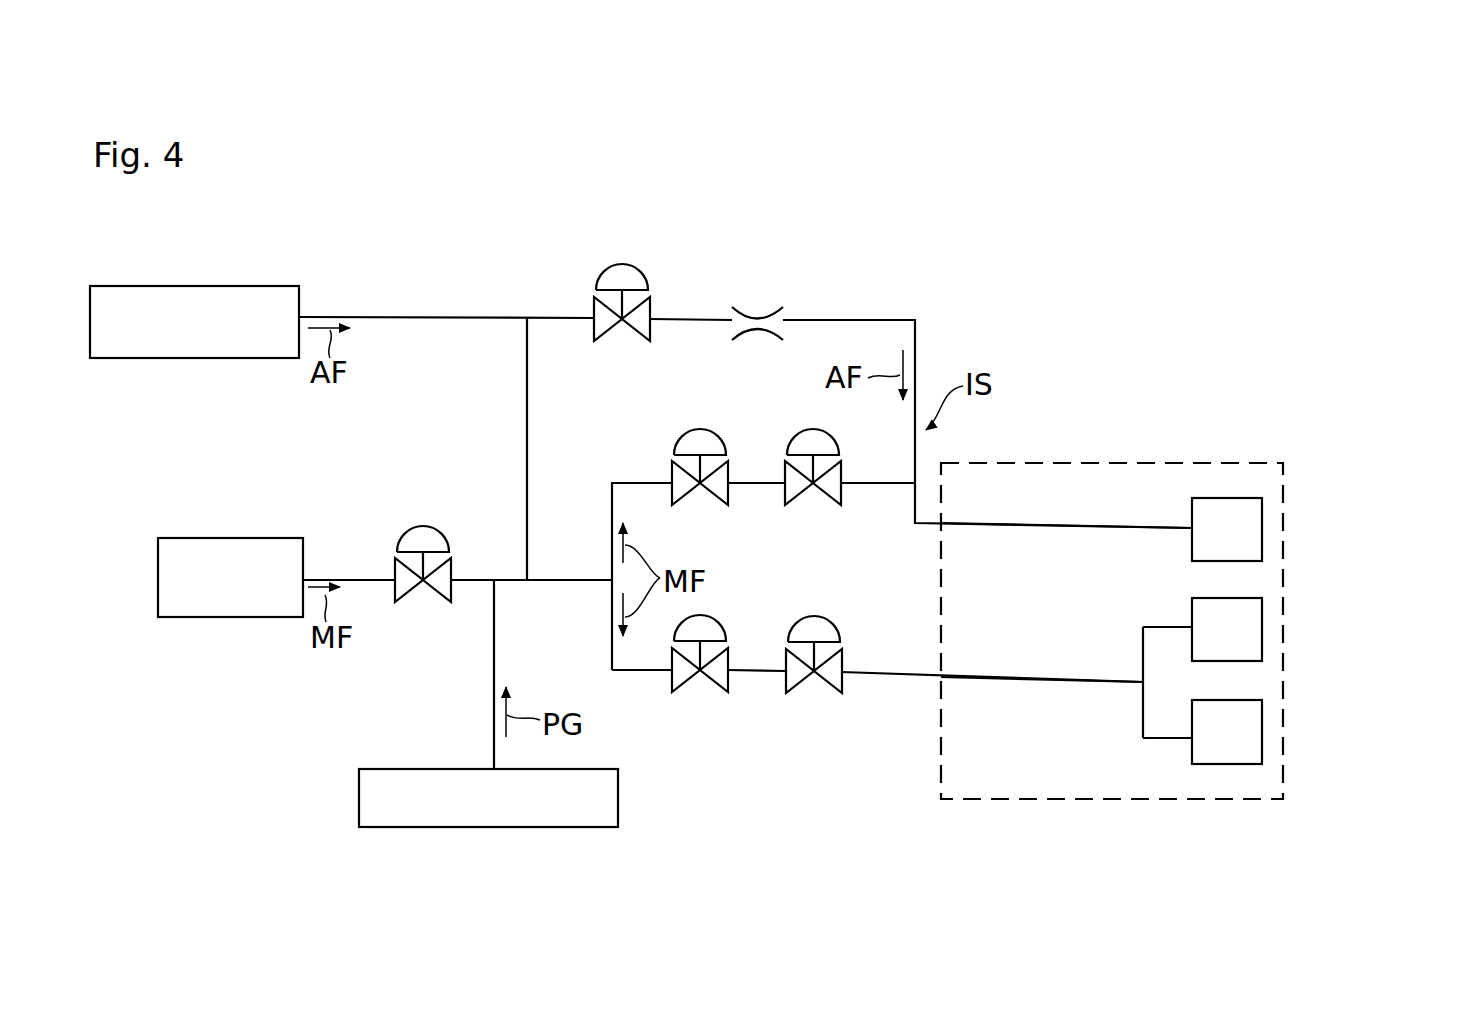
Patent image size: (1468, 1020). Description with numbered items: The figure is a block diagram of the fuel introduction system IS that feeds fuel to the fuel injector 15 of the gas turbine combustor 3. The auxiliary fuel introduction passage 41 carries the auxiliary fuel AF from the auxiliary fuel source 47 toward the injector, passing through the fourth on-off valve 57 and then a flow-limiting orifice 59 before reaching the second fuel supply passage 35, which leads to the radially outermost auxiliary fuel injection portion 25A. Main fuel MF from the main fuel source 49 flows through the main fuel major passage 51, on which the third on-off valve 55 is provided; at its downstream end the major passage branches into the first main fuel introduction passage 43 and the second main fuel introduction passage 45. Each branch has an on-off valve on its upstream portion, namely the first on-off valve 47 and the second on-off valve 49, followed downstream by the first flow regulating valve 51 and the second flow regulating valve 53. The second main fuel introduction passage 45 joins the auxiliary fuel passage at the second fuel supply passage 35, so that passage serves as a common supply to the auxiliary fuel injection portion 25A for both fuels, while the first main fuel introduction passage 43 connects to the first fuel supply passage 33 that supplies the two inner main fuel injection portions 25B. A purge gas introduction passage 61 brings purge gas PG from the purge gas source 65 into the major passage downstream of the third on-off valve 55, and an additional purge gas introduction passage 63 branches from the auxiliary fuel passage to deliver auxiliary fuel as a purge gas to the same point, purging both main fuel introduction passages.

The gas turbine combustor 3 is at (981, 226).
The fuel injector 15 is at (1103, 800).
The auxiliary fuel injection portion 25A is at (1262, 515).
The main fuel injection portion 25B is at (1262, 637).
The first fuel supply passage 33 is at (985, 683).
The second fuel supply passage 35 is at (973, 526).
The auxiliary fuel introduction passage 41 is at (874, 320).
The first main fuel introduction passage 43 is at (645, 672).
The second main fuel introduction passage 45 is at (628, 482).
The auxiliary fuel source / first on-off valve 47 is at (226, 285).
The main fuel source / second on-off valve 49 is at (236, 537).
The main fuel major passage / first flow regulating valve 51 is at (556, 583).
The second flow regulating valve 53 is at (825, 700).
The third on-off valve 55 is at (432, 605).
The fourth on-off valve 57 is at (633, 335).
The orifice 59 is at (760, 318).
The purge gas introduction passage 61 is at (494, 742).
The additional purge gas introduction passage 63 is at (527, 370).
The purge gas source 65 is at (520, 828).